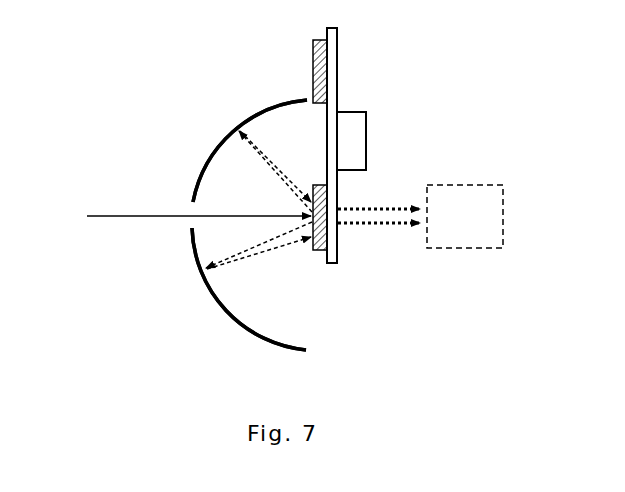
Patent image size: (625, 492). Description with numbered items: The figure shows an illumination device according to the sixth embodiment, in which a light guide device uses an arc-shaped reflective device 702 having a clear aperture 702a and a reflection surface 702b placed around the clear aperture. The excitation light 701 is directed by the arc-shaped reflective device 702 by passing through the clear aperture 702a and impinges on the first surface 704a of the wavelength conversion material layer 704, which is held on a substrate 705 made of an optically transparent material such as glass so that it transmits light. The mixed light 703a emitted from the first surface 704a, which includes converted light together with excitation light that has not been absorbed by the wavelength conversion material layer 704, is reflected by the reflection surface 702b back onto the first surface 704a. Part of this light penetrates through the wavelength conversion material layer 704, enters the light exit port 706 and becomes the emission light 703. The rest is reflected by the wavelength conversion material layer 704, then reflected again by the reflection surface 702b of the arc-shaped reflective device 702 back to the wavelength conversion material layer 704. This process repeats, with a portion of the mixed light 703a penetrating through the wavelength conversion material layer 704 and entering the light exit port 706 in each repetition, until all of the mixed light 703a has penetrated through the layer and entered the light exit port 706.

The excitation light 701 is at (114, 220).
The arc-shaped reflective device 702 is at (222, 130).
The clear aperture 702a is at (187, 225).
The reflection surface 702b is at (215, 302).
The emission light 703 is at (385, 226).
The mixed light 703a is at (248, 262).
The wavelength conversion material layer 704 is at (313, 52).
The first surface 704a is at (313, 188).
The substrate 705 is at (337, 50).
The light exit port 706 is at (455, 200).